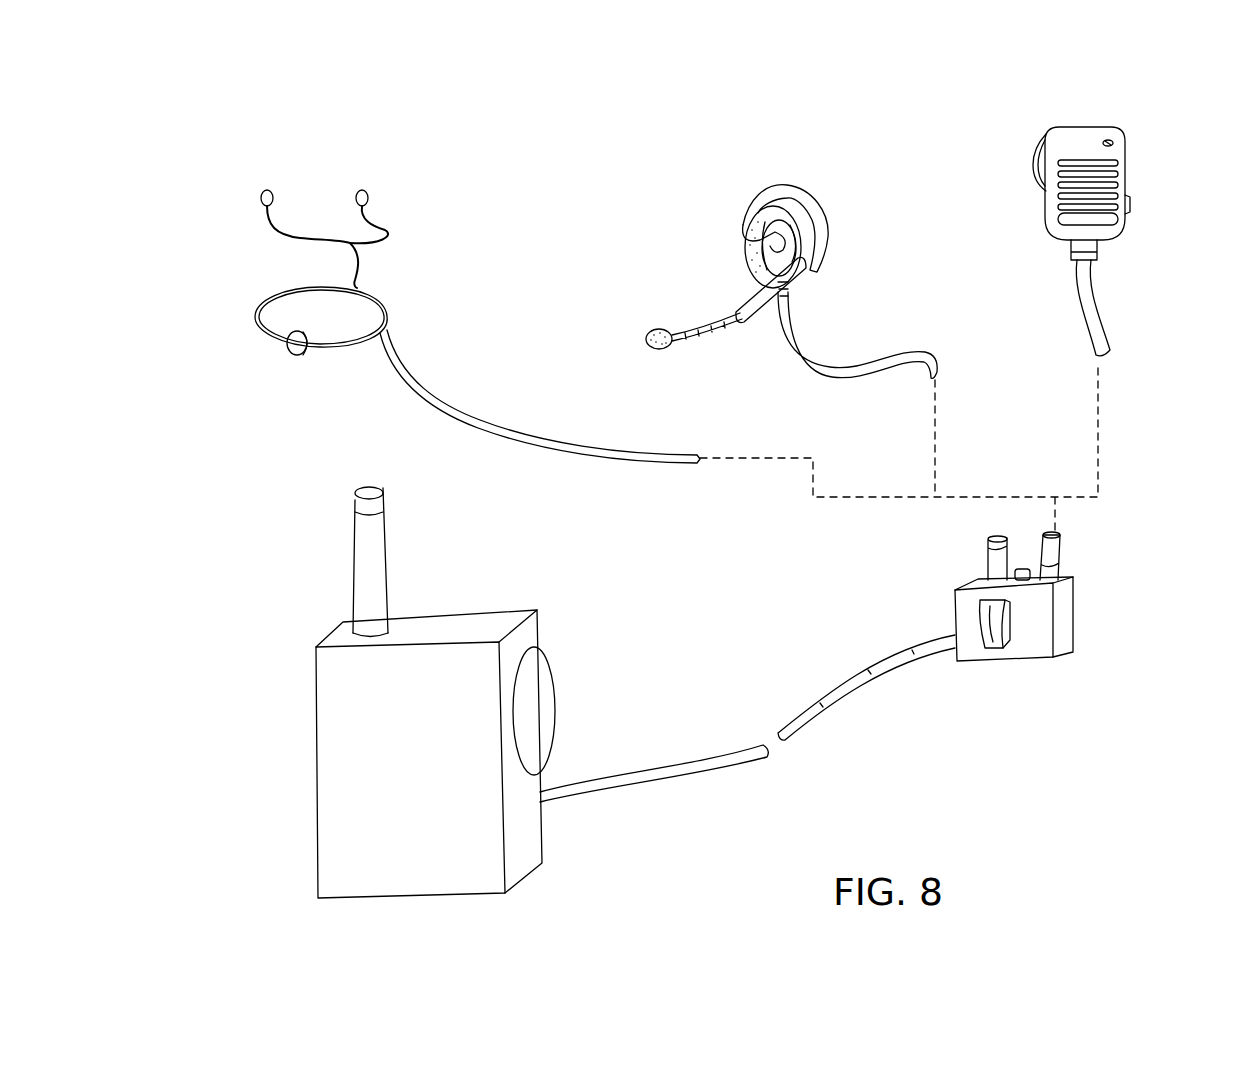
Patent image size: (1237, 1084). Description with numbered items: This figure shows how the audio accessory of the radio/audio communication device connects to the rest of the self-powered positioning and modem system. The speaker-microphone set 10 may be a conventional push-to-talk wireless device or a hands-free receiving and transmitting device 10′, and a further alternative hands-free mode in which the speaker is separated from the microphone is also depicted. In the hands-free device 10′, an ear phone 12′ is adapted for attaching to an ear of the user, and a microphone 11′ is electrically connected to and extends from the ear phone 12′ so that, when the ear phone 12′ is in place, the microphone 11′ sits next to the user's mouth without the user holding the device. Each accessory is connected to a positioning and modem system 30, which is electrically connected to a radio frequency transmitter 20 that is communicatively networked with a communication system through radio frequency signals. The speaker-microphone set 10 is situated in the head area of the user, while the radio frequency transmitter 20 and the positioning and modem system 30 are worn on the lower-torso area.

The speaker-microphone set 10 is at (1093, 137).
The hands-free receiving and transmitting device 10′ is at (788, 244).
The microphone 11′ is at (653, 328).
The ear phone 12′ is at (747, 253).
The radio frequency transmitter 20 is at (367, 755).
The positioning and modem system 30 is at (1035, 642).